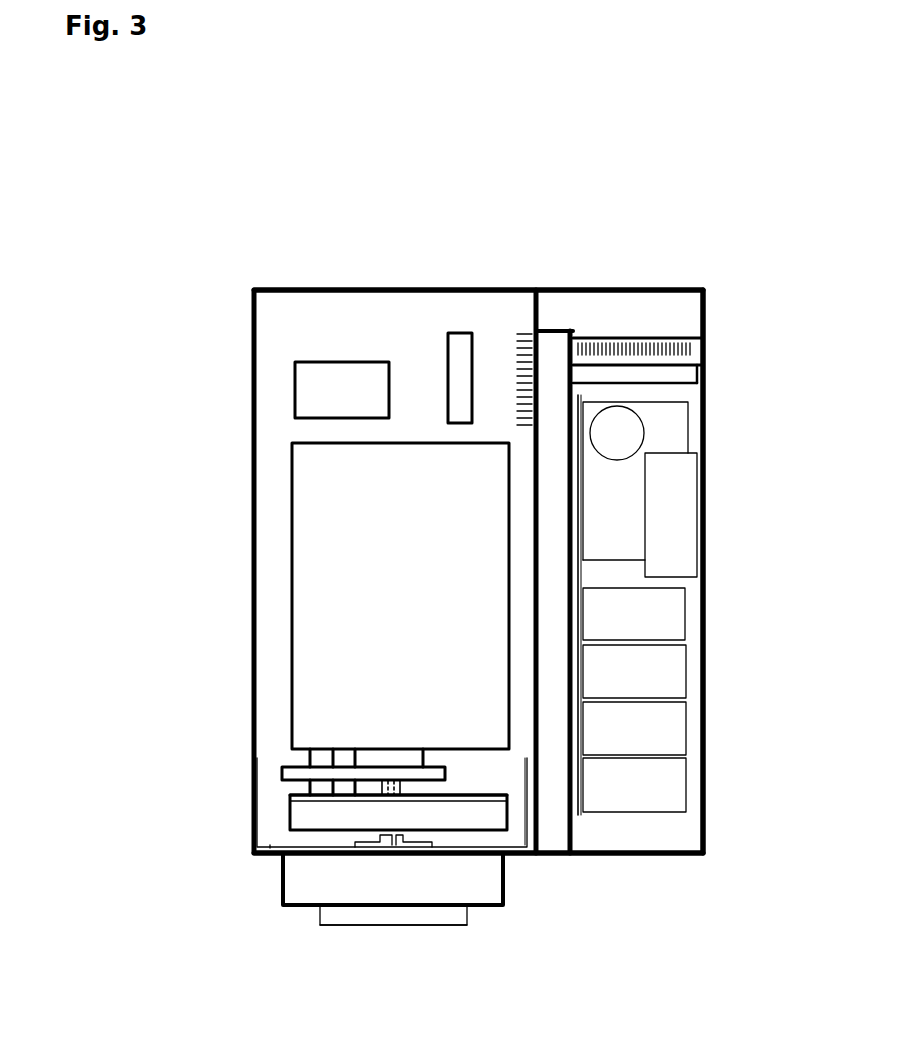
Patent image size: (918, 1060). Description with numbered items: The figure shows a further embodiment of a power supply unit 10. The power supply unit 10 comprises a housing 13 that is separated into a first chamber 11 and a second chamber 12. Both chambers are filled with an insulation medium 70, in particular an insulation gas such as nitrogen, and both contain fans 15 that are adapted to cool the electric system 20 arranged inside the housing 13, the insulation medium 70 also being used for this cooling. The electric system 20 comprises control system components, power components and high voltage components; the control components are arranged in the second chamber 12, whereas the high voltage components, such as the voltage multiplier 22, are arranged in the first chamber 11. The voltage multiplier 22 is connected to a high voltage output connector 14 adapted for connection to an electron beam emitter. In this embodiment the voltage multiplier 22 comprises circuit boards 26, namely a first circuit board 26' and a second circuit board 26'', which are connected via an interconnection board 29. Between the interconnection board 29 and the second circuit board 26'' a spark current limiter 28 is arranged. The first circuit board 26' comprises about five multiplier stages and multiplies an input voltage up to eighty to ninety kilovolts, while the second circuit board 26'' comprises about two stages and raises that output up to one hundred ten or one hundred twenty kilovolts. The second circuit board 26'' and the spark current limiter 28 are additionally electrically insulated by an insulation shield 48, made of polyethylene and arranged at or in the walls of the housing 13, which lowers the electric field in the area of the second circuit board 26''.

The power supply unit 10 is at (218, 326).
The first chamber 11 is at (502, 307).
The second chamber 12 is at (688, 312).
The housing 13 is at (313, 287).
The high voltage output connector 14 is at (306, 931).
The fans 15 is at (627, 372).
The electric system 20 is at (404, 323).
The voltage multiplier 22 is at (288, 636).
The circuit boards 26 is at (288, 636).
The first circuit board 26' is at (293, 596).
The second circuit board 26'' is at (287, 781).
The spark current limiter 28 is at (480, 788).
The interconnection board 29 is at (293, 775).
The insulation shield 48 is at (267, 852).
The insulation medium 70 is at (270, 808).